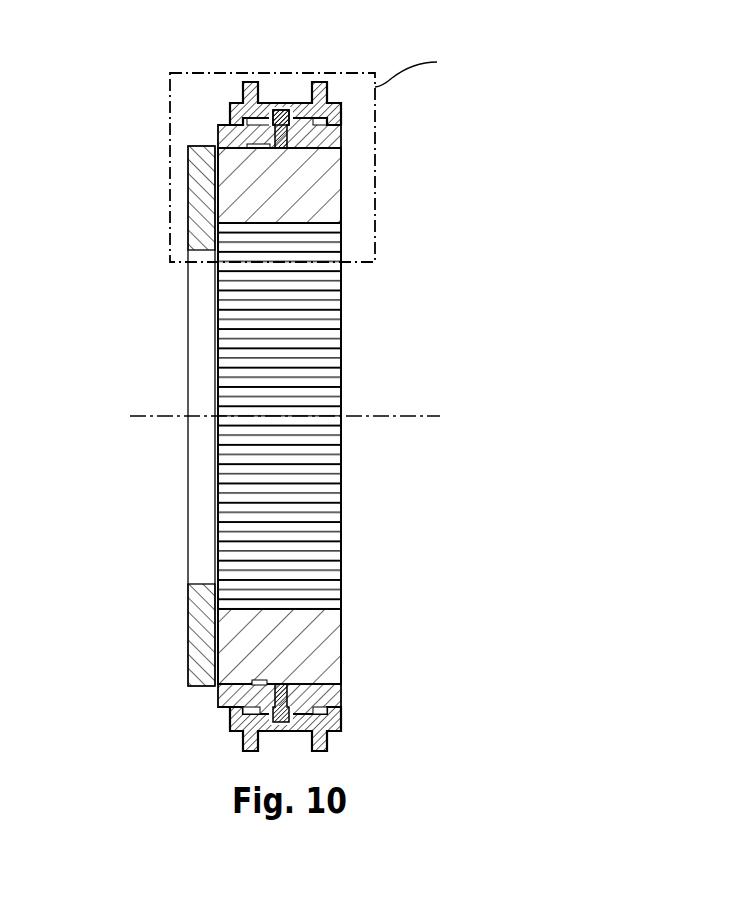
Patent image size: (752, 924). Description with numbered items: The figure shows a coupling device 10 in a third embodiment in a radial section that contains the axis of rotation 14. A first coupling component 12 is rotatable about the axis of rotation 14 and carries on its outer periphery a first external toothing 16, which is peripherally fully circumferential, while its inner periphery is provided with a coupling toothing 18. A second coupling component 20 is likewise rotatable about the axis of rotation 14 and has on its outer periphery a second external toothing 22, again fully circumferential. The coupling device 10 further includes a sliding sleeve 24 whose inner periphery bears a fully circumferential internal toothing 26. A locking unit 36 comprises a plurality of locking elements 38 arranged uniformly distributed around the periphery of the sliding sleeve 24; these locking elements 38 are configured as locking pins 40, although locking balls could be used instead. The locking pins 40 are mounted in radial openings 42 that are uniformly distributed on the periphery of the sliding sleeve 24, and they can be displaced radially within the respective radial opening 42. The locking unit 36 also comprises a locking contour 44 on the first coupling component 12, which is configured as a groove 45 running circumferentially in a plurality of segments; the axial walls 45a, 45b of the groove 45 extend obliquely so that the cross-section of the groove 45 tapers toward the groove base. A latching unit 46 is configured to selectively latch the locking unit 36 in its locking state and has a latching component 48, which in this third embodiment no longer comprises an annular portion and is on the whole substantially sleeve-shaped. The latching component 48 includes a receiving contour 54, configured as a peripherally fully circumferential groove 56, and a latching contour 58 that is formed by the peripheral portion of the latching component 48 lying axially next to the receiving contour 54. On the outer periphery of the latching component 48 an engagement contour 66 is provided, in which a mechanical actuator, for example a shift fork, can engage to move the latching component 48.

The coupling device 10 is at (517, 95).
The first coupling component 12 is at (328, 658).
The axis of rotation 14 is at (420, 417).
The first external toothing 16 is at (306, 689).
The coupling toothing 18 is at (292, 537).
The second coupling component 20 is at (198, 648).
The second external toothing 22 is at (200, 143).
The sliding sleeve 24 is at (308, 126).
The internal toothing 26 is at (307, 150).
The locking unit 36 is at (420, 193).
The locking elements 38 is at (287, 103).
The locking pins 40 is at (319, 78).
The radial openings 42 is at (258, 133).
The locking contour 44 is at (256, 155).
The groove 45 is at (214, 213).
The axial wall 45a is at (245, 153).
The axial wall 45b is at (273, 157).
The latching unit 46 is at (500, 175).
The latching component 48 is at (232, 104).
The receiving contour 54 is at (289, 99).
The groove 56 is at (281, 117).
The latching contour 58 is at (342, 157).
The engagement contour 66 is at (291, 752).